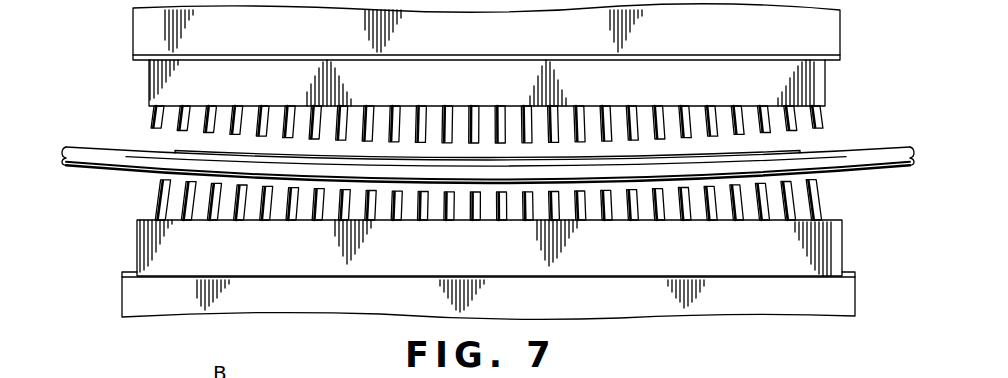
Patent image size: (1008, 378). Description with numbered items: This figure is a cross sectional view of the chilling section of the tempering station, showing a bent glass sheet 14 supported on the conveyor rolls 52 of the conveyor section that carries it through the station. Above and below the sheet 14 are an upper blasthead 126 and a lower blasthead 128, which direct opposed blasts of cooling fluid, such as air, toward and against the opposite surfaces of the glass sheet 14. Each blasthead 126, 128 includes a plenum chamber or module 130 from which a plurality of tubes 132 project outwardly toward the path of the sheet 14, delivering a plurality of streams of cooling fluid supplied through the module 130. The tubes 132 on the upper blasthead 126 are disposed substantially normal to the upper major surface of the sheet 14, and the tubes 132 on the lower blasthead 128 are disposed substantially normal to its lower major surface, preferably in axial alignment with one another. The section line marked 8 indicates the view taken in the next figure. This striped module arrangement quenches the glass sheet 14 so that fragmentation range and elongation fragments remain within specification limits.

The upper blasthead 126 is at (145, 37).
The plenum chambers or modules 130 is at (820, 80).
The tubes 132 is at (816, 128).
The lower blasthead 128 is at (797, 310).
The conveyor rolls 52 is at (92, 148).
The glass sheets 14 is at (175, 150).
The section line 8- 8 is at (50, 215).